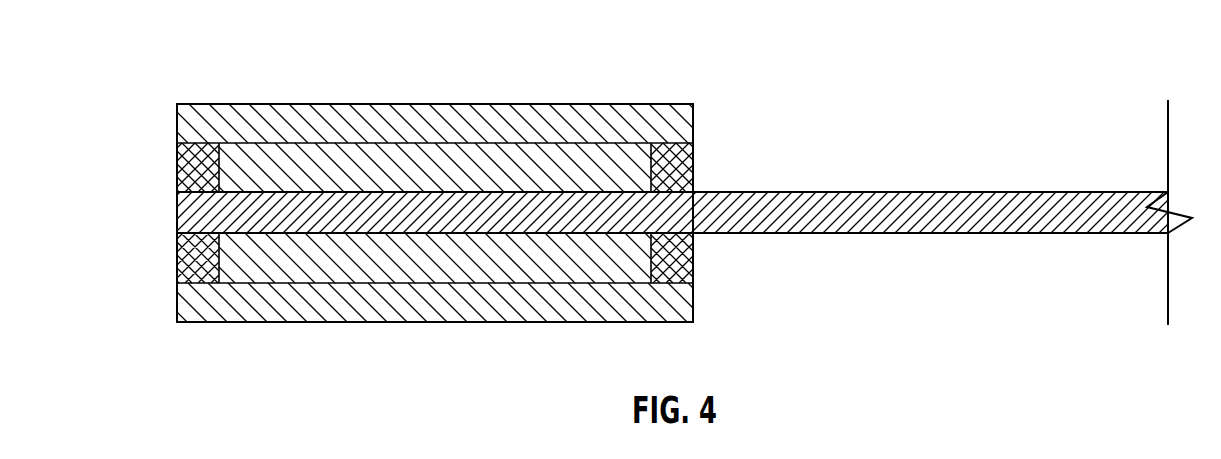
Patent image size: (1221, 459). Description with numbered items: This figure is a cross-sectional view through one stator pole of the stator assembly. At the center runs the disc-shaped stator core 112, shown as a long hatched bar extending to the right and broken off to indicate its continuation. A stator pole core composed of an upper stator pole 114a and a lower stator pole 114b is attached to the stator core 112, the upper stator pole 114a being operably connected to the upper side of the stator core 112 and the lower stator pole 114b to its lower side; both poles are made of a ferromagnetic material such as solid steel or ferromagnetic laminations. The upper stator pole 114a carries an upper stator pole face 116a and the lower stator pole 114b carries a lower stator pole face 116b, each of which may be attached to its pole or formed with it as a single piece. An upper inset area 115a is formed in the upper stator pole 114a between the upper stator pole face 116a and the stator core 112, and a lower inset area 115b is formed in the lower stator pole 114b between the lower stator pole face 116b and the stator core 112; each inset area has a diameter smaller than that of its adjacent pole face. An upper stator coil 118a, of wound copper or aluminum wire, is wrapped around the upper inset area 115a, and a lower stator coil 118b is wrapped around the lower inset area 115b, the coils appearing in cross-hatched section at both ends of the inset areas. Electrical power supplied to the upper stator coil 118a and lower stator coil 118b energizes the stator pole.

The stator core 112 is at (910, 215).
The upper stator pole 114a is at (278, 167).
The lower stator pole 114b is at (278, 258).
The upper inset area 115a is at (160, 165).
The lower inset area 115b is at (160, 260).
The upper stator pole face 116a is at (358, 122).
The lower stator pole face 116b is at (358, 302).
The upper stator coil 118a is at (672, 167).
The lower stator coil 118b is at (673, 260).